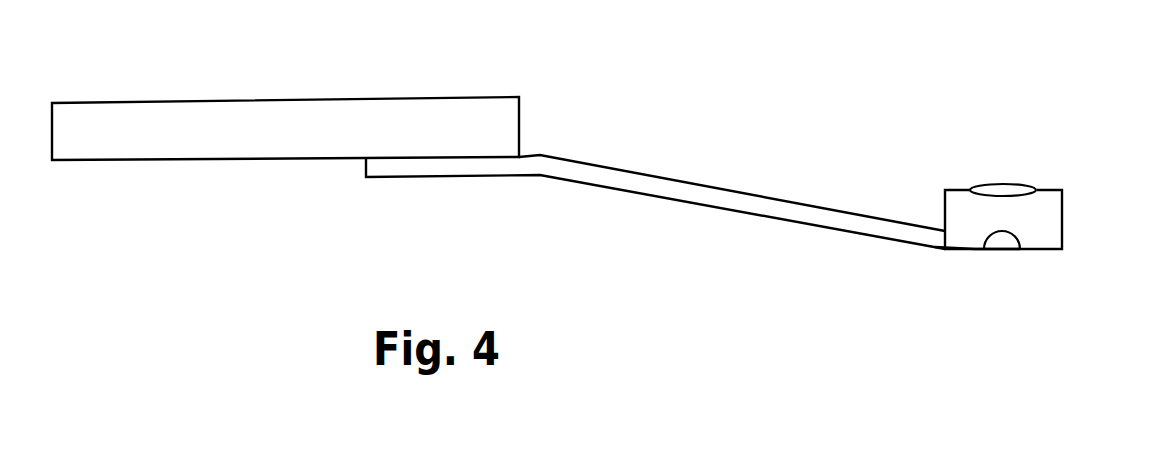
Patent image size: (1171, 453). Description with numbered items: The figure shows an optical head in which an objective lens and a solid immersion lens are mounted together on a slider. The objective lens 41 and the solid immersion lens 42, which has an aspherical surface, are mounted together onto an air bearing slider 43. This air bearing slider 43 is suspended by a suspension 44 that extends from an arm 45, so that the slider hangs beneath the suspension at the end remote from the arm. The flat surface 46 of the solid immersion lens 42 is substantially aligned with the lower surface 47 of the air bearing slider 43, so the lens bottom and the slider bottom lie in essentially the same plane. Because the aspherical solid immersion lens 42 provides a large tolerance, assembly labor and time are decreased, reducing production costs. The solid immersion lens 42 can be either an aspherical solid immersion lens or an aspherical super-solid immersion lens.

The objective lens 41 is at (993, 190).
The solid immersion lens 42 is at (1007, 240).
The air bearing slider 43 is at (1043, 210).
The suspension 44 is at (652, 173).
The arm 45 is at (444, 118).
The flat surface 46 is at (995, 253).
The lower surface 47 is at (955, 253).